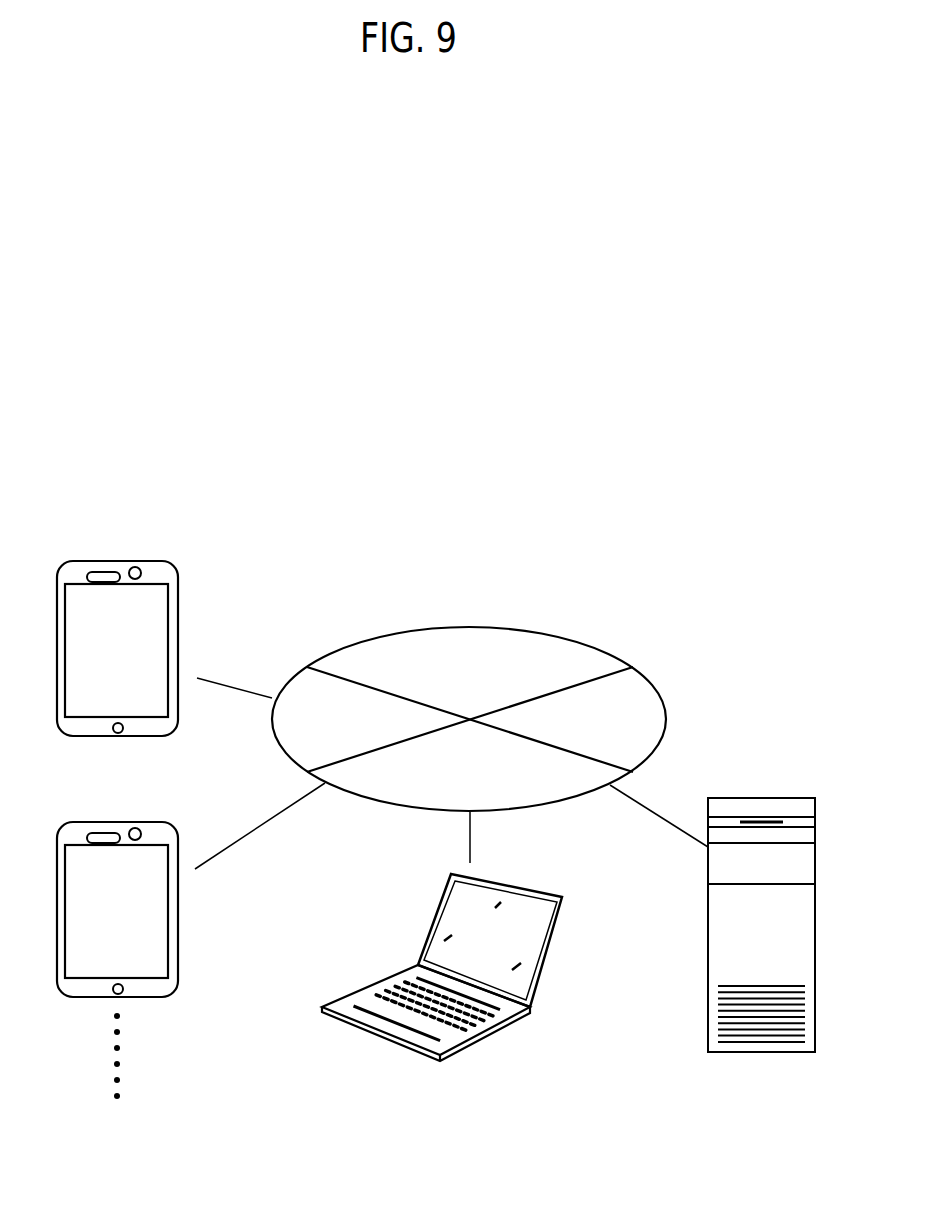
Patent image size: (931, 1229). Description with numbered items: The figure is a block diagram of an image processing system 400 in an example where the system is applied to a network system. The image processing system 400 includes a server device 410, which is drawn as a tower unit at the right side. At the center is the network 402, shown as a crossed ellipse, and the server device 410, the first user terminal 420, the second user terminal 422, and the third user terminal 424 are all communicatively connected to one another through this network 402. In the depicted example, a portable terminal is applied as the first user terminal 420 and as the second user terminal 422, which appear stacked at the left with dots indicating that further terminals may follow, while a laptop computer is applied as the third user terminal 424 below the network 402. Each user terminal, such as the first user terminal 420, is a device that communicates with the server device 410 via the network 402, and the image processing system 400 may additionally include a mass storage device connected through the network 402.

The image processing system 400 is at (582, 510).
The network 402 is at (622, 660).
The server device 410 is at (762, 797).
The first user terminal 420 is at (118, 560).
The second user terminal 422 is at (118, 821).
The third user terminal 424 is at (388, 1040).